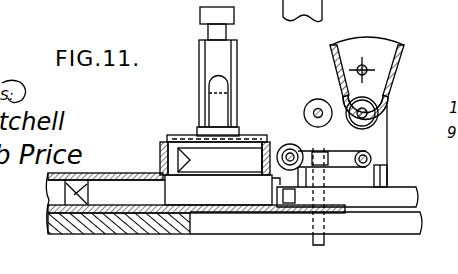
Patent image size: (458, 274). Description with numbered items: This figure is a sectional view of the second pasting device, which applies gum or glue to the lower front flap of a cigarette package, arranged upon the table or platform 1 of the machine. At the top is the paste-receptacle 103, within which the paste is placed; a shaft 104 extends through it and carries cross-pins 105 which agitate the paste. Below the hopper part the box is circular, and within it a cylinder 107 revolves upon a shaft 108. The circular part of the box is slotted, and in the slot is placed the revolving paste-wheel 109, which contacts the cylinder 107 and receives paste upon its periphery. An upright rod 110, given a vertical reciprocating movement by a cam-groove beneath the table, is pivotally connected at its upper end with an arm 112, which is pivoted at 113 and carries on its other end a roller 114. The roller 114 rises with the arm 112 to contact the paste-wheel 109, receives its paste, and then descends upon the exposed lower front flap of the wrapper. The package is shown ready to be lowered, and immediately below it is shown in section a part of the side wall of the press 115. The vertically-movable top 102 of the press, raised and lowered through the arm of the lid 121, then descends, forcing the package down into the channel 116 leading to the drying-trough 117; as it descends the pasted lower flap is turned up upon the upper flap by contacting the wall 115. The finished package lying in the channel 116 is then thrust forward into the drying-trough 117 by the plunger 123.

The table or platform 1 is at (306, 232).
The vertically-movable top 102 is at (185, 136).
The paste-receptacle 103 is at (366, 48).
The shaft 104 is at (370, 68).
The cross-pins 105 is at (342, 62).
The cylinder 107 is at (377, 106).
The shaft 108 is at (368, 115).
The paste-wheel 109 is at (305, 104).
The upright rod 110 is at (329, 231).
The arm 112 is at (336, 169).
The pivot 113 is at (373, 160).
The roller 114 is at (287, 144).
The side wall of the press 115 is at (272, 179).
The channel 116 is at (218, 190).
The drying-trough 117 is at (53, 197).
The arm of the lid 121 is at (218, 82).
The plunger 123 is at (395, 189).